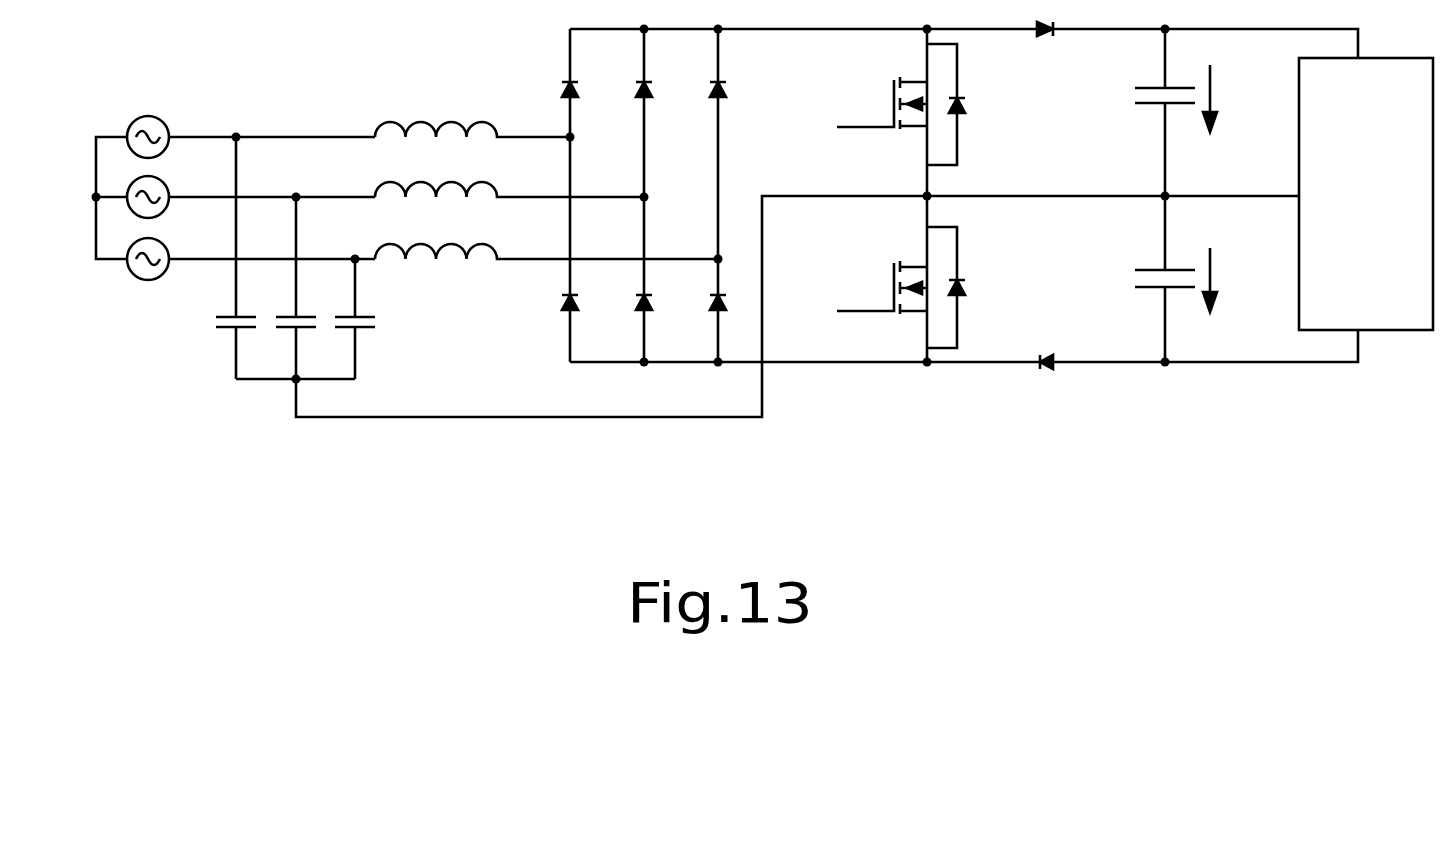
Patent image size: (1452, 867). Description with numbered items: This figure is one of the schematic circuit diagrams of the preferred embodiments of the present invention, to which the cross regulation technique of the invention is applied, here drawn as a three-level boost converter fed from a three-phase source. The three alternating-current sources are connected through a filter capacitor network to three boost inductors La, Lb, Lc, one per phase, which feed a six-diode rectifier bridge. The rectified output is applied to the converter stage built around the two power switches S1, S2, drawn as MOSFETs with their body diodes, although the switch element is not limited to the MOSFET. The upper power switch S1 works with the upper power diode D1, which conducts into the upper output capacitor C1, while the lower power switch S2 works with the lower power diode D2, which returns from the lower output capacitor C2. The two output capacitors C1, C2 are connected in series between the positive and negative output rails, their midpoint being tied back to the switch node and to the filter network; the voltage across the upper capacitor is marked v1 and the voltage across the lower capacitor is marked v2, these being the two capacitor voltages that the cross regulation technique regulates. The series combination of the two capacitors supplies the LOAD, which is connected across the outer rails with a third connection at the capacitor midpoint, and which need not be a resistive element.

The phase A boost inductor La is at (472, 122).
The phase B boost inductor Lb is at (509, 182).
The phase C boost inductor Lc is at (546, 244).
The power switch S1 is at (901, 112).
The power switch S2 is at (901, 279).
The power diode D1 is at (1038, 50).
The power diode D2 is at (1038, 343).
The output capacitor C1 is at (1138, 112).
The output capacitor C2 is at (1138, 279).
The upper capacitor voltage v1 is at (1225, 98).
The lower capacitor voltage v2 is at (1225, 280).
The load LOAD is at (1366, 194).